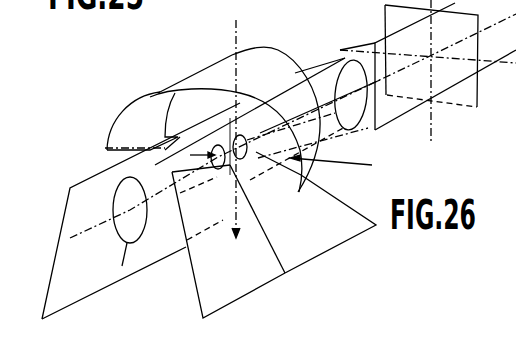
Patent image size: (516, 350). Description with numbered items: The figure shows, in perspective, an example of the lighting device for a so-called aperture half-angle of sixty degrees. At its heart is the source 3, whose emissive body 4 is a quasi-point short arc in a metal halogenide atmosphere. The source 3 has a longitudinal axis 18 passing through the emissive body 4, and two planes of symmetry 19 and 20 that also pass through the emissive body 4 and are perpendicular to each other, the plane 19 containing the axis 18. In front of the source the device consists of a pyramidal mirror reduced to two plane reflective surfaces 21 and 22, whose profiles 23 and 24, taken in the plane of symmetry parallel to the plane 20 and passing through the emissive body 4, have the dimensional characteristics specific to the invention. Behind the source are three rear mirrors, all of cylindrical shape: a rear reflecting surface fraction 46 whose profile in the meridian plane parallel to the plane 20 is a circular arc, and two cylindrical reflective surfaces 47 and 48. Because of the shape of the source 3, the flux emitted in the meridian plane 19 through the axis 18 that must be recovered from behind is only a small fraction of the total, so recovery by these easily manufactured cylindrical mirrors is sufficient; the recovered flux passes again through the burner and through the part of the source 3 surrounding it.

The source 3 is at (161, 210).
The emissive body 4 is at (230, 150).
The longitudinal axis 18 is at (114, 212).
The plane of symmetry 19 is at (387, 112).
The plane of symmetry 20 is at (470, 92).
The plane reflective surface 21 is at (312, 226).
The plane reflective surface 22 is at (80, 272).
The profile 23 is at (280, 258).
The profile 24 is at (117, 262).
The rear reflecting surface fraction 46 is at (253, 78).
The cylindrical reflective surface 47 is at (157, 90).
The cylindrical reflective surface 48 is at (328, 150).